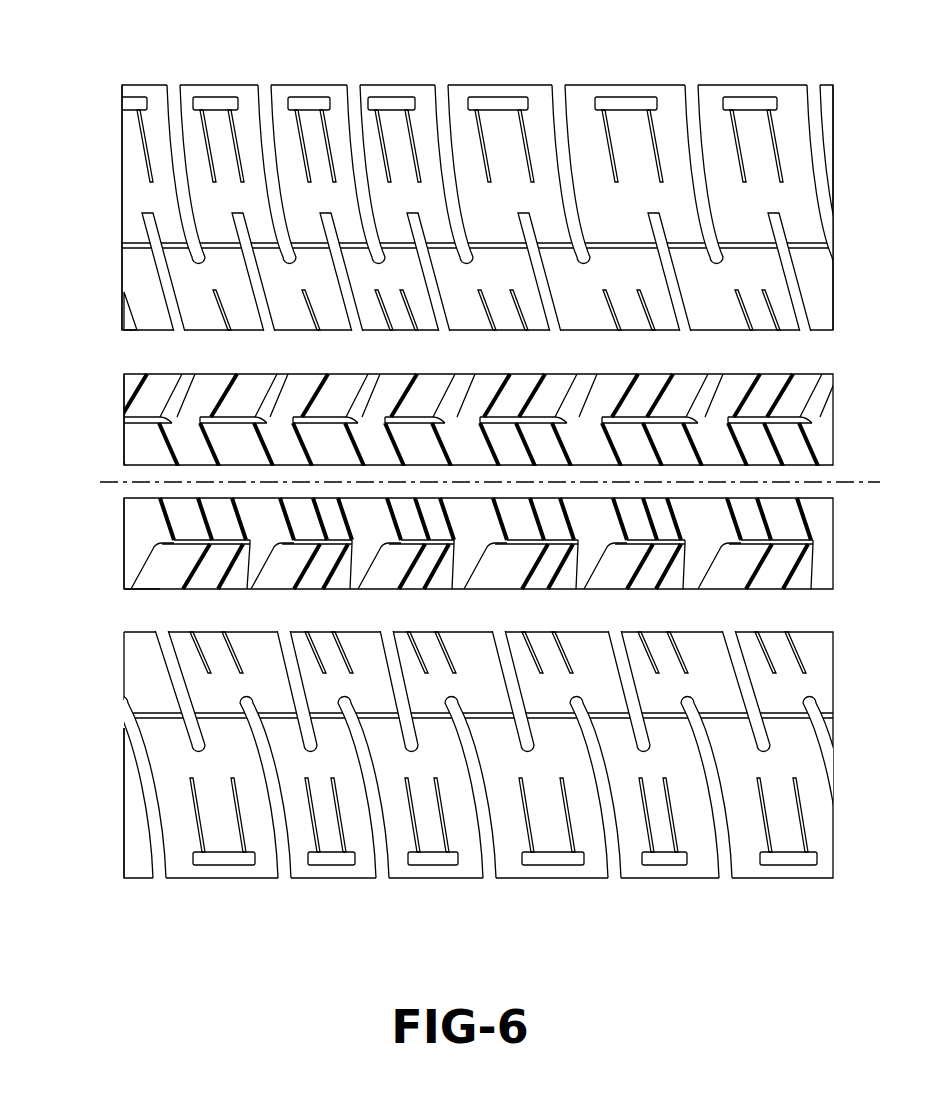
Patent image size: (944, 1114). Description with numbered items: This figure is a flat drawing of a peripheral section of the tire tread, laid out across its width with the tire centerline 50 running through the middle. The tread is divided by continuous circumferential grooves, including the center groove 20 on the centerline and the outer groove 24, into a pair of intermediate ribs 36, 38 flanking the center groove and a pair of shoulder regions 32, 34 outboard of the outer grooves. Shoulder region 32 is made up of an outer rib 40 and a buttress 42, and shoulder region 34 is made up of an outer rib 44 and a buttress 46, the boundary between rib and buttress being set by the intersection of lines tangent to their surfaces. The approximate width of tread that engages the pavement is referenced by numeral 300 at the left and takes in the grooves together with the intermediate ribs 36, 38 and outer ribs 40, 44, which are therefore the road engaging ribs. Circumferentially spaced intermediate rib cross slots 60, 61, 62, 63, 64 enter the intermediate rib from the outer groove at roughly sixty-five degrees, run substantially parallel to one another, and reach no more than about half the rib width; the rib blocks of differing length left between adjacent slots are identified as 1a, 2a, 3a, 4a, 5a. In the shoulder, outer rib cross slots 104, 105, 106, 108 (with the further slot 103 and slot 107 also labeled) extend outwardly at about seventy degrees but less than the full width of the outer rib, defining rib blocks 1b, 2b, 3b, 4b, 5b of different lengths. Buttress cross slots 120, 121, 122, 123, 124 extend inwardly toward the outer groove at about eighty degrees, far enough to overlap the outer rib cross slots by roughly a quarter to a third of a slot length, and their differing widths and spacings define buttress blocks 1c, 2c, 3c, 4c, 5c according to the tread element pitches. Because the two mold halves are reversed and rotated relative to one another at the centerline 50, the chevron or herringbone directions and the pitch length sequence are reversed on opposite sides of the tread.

The road engaging tread width 300 is at (56, 185).
The center groove 20 is at (124, 500).
The outer groove 24 is at (127, 612).
The tire centerline 50 is at (122, 444).
The shoulder region 32 is at (868, 85).
The shoulder region 34 is at (868, 632).
The intermediate rib 36 is at (868, 374).
The intermediate rib 38 is at (868, 498).
The outer rib 40 is at (95, 185).
The buttress 42 is at (95, 85).
The outer rib 44 is at (95, 632).
The buttress 46 is at (95, 778).
The intermediate rib cross slot 60 is at (346, 412).
The intermediate rib cross slot 61 is at (287, 428).
The intermediate rib cross slot 62 is at (611, 544).
The intermediate rib cross slot 63 is at (828, 385).
The intermediate rib cross slot 64 is at (721, 544).
The lateral groove 103 is at (832, 713).
The outer rib cross slot 104 is at (357, 288).
The outer rib cross slot 105 is at (269, 288).
The outer rib cross slot 106 is at (314, 689).
The shoulder edge 107 is at (826, 330).
The outer rib cross slot 108 is at (753, 733).
The buttress cross slot 120 is at (348, 84).
The buttress cross slot 121 is at (259, 84).
The buttress cross slot 122 is at (628, 912).
The buttress cross slot 123 is at (808, 84).
The buttress cross slot 124 is at (738, 912).
The rib block 1a is at (357, 373).
The rib block 1b is at (337, 333).
The buttress block 1c is at (292, 96).
The rib block 2a is at (252, 373).
The rib block 2b is at (240, 333).
The buttress block 2c is at (200, 96).
The rib block 3a is at (659, 590).
The rib block 3b is at (642, 631).
The buttress block 3c is at (689, 908).
The rib block 4a is at (805, 373).
The rib block 4b is at (762, 333).
The buttress block 4c is at (733, 96).
The rib block 5a is at (767, 590).
The rib block 5b is at (743, 631).
The buttress block 5c is at (805, 908).